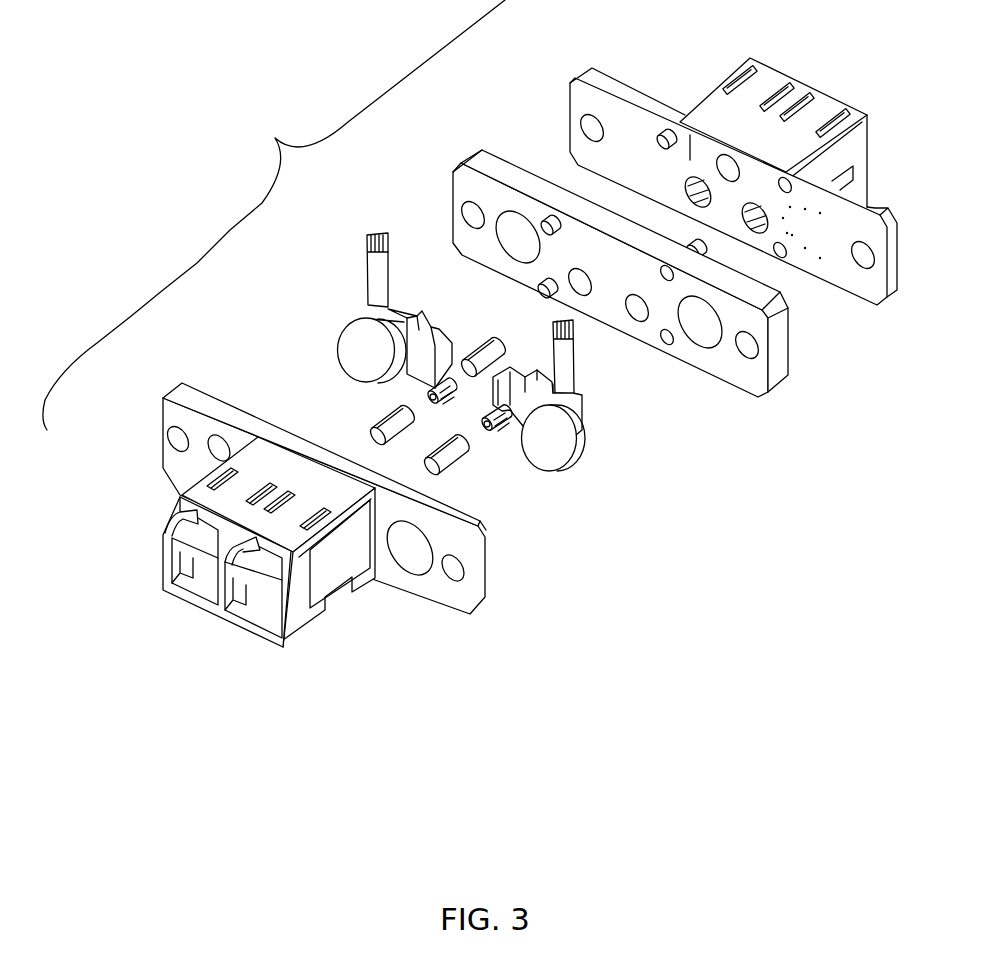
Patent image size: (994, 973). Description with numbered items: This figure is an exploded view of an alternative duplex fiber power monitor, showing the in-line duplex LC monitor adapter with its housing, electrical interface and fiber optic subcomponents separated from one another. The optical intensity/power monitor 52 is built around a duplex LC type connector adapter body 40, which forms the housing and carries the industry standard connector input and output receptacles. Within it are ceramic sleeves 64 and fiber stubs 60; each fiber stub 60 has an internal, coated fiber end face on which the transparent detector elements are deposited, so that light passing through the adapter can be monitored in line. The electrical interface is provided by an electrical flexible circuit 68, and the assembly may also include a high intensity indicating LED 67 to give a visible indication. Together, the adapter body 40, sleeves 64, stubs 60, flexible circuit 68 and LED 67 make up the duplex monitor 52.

The duplex LC type connector adapter body 40 is at (330, 587).
The optical intensity/power monitor 52 is at (274, 215).
The fiber stub 60 is at (500, 427).
The ceramic sleeve 64 is at (377, 417).
The high intensity indicating LED 67 is at (555, 453).
The electrical flexible circuit 68 is at (422, 360).